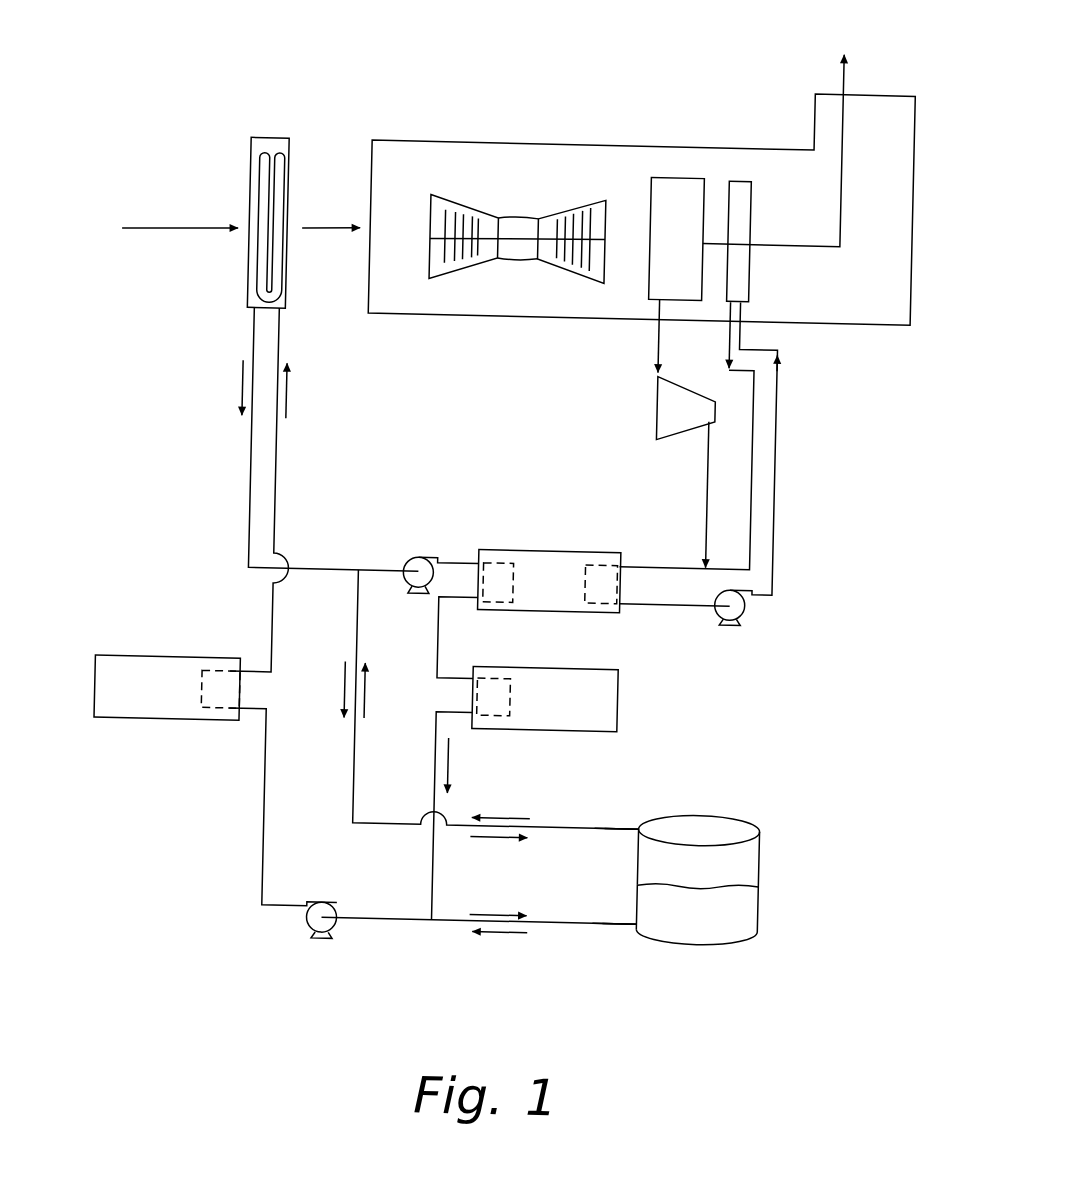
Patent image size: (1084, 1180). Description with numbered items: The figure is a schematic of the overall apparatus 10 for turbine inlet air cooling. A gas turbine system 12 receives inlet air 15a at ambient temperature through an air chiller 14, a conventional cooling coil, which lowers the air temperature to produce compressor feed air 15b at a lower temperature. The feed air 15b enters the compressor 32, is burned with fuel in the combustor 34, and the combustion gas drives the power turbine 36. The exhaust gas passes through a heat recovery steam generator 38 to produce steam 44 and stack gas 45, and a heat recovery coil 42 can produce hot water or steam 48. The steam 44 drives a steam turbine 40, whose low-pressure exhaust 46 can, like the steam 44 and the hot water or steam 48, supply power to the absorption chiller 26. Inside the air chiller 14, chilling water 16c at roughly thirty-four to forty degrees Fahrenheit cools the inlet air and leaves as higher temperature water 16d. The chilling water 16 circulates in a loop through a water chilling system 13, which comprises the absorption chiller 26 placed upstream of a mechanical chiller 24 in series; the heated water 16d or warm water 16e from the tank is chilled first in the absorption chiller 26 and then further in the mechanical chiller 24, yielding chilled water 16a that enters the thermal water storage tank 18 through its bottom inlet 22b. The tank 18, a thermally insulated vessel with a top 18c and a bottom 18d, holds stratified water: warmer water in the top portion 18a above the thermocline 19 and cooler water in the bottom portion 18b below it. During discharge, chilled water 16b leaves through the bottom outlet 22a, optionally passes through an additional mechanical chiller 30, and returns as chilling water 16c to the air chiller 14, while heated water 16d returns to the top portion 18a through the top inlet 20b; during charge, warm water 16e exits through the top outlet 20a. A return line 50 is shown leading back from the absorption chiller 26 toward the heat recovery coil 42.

The overall apparatus 10 is at (322, 45).
The gas turbine system 12 is at (558, 136).
The water chilling system 13 is at (717, 666).
The air chiller 14 is at (261, 139).
The inlet air 15a is at (167, 235).
The compressor feed air 15b is at (322, 235).
The chilling water 16 is at (742, 909).
The chilled chilling water 16a is at (454, 759).
The chilled water 16b is at (270, 824).
The circulating chilling water 16c is at (275, 453).
The higher temperature circulating water 16d is at (247, 463).
The warm water 16e is at (512, 818).
The thermal water storage tank 18 is at (723, 887).
The top portion 18a is at (766, 843).
The bottom portion 18b is at (766, 913).
The top 18c is at (700, 814).
The bottom 18d is at (698, 942).
The thermocline 19 is at (745, 883).
The top outlet 20a is at (643, 829).
The top inlet 20b is at (639, 804).
The bottom outlet 22a is at (643, 935).
The bottom inlet 22b is at (614, 967).
The mechanical chiller 24 is at (622, 698).
The absorption chiller 26 is at (549, 549).
The additional mechanical chiller 30 is at (168, 664).
The compressor 32 is at (461, 210).
The combustor 34 is at (508, 217).
The power turbine 36 is at (510, 261).
The heat recovery steam generator 38 is at (676, 175).
The steam turbine 40 is at (651, 409).
The heat recovery coil 42 is at (744, 202).
The steam 44 is at (652, 330).
The stack gas 45 is at (834, 168).
The steam turbine exhaust 46 is at (703, 491).
The hot water or steam 48 is at (750, 443).
The fluid return line 50 is at (774, 487).